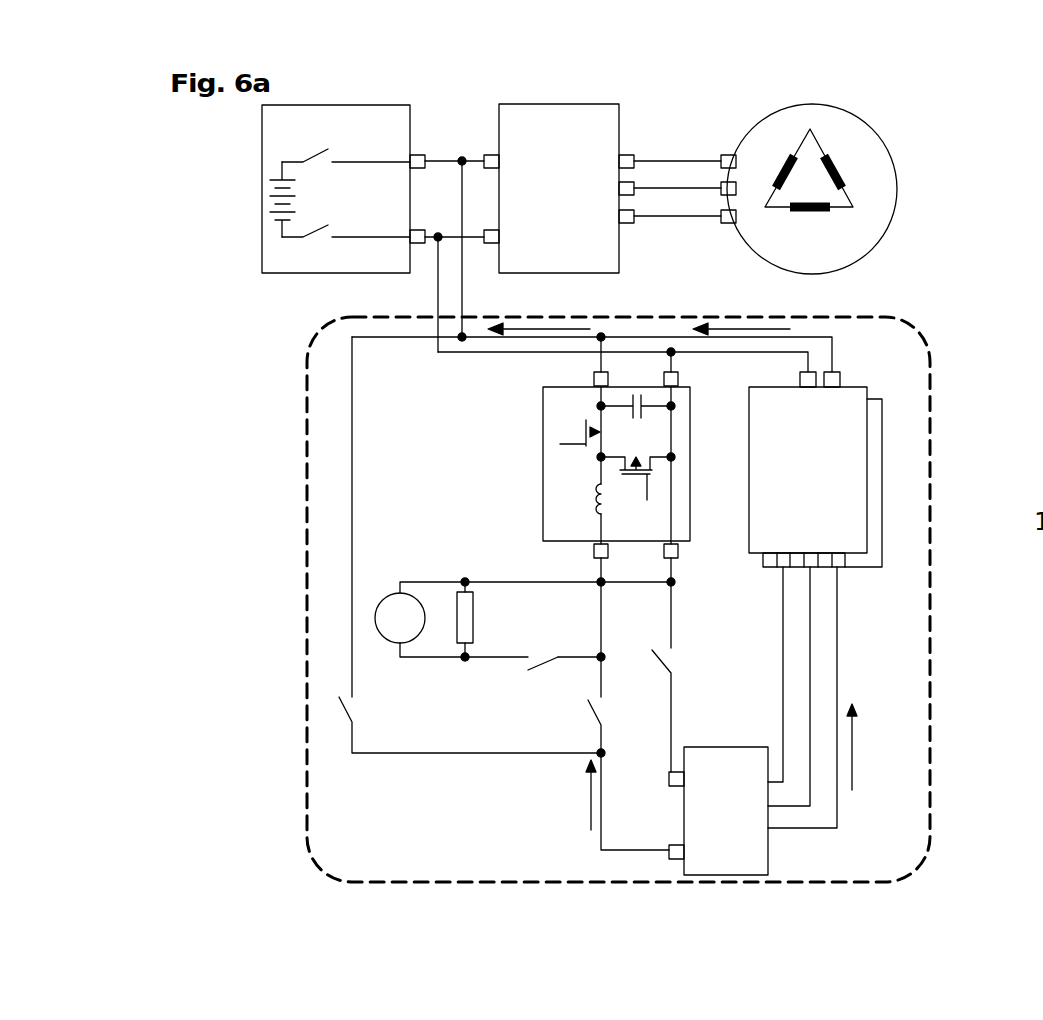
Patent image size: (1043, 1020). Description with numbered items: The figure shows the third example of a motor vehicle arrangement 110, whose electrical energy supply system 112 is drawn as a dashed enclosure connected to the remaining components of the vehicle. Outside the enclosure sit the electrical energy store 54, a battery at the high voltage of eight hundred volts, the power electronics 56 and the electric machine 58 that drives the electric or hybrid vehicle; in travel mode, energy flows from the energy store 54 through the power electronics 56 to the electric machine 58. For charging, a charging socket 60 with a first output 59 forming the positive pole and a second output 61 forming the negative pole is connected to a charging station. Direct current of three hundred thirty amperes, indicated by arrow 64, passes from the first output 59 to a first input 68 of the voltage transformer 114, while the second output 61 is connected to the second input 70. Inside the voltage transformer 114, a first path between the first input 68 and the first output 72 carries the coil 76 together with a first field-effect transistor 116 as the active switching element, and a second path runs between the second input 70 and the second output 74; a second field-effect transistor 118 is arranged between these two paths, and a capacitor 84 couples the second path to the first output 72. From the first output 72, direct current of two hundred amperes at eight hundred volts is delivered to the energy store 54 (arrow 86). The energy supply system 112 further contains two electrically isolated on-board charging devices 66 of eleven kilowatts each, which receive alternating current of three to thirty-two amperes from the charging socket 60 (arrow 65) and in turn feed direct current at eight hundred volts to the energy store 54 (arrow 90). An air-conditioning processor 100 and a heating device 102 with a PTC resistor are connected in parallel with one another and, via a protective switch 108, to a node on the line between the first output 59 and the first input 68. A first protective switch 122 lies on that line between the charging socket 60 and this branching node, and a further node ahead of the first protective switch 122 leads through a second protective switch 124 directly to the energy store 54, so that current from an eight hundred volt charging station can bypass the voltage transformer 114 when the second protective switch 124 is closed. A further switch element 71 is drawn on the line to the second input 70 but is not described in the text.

The electrical energy store 54 is at (280, 273).
The power electronics 56 is at (580, 273).
The electric machine 58 is at (882, 243).
The arrow 86 is at (543, 318).
The arrow 90 is at (737, 318).
The electrical energy supply system 112 is at (917, 335).
The motor vehicle arrangement 110 is at (290, 557).
The first output 72 is at (594, 378).
The second output 74 is at (680, 378).
The capacitor 84 is at (638, 363).
The first field-effect transistor 116 is at (582, 432).
The coil 76 is at (595, 495).
The second field-effect transistor 118 is at (631, 480).
The voltage transformer 114 is at (600, 483).
The first input 68 is at (594, 551).
The second input 70 is at (686, 558).
The charging devices 66 is at (747, 527).
The air-conditioning processor 100 is at (393, 592).
The heating device 102 is at (476, 618).
The protective switch 108 is at (540, 655).
The second protective switch 124 is at (356, 706).
The first protective switch 122 is at (585, 720).
The second output 61 is at (669, 777).
The switch 71 is at (678, 660).
The arrow 64 is at (591, 808).
The first output 59 is at (669, 850).
The charging socket 60 is at (742, 725).
The arrow 65 is at (852, 745).